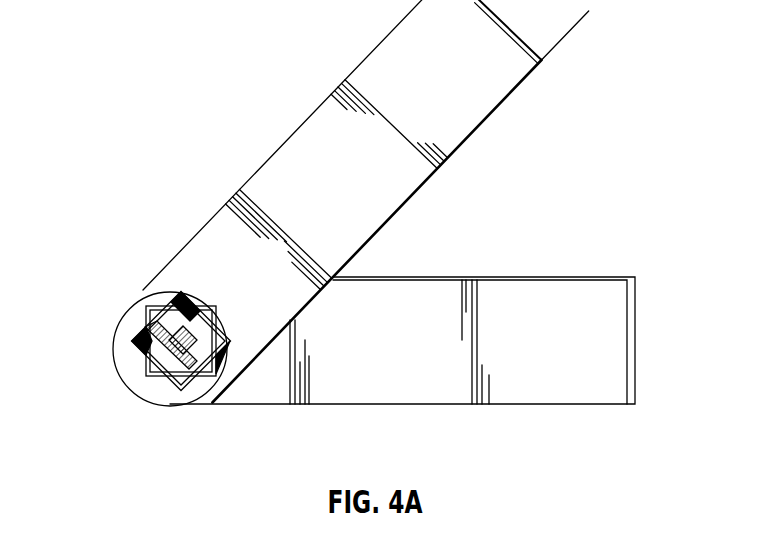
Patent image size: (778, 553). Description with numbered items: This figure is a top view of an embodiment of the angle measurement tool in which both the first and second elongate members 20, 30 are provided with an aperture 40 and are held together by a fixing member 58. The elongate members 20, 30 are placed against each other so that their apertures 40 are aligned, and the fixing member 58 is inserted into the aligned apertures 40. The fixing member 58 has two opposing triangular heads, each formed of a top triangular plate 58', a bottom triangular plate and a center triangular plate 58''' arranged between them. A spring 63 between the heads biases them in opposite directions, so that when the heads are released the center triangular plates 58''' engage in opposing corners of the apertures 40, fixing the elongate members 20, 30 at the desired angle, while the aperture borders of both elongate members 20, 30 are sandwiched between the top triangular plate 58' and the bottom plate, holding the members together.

The first elongate member 20 is at (467, 143).
The second elongate member 30 is at (583, 405).
The aperture 40 is at (203, 380).
The fixing member 58 is at (177, 377).
The top triangular plate 58' is at (123, 342).
The center triangular plate 58''' is at (186, 290).
The spring 63 is at (145, 310).